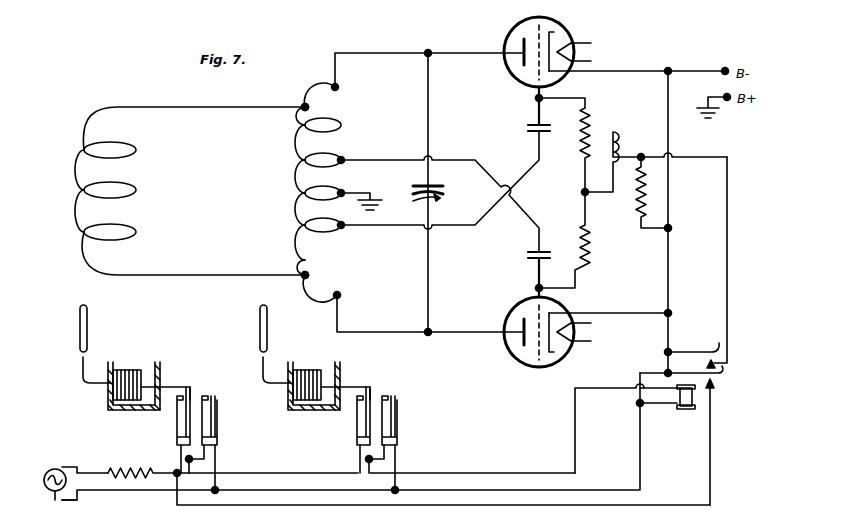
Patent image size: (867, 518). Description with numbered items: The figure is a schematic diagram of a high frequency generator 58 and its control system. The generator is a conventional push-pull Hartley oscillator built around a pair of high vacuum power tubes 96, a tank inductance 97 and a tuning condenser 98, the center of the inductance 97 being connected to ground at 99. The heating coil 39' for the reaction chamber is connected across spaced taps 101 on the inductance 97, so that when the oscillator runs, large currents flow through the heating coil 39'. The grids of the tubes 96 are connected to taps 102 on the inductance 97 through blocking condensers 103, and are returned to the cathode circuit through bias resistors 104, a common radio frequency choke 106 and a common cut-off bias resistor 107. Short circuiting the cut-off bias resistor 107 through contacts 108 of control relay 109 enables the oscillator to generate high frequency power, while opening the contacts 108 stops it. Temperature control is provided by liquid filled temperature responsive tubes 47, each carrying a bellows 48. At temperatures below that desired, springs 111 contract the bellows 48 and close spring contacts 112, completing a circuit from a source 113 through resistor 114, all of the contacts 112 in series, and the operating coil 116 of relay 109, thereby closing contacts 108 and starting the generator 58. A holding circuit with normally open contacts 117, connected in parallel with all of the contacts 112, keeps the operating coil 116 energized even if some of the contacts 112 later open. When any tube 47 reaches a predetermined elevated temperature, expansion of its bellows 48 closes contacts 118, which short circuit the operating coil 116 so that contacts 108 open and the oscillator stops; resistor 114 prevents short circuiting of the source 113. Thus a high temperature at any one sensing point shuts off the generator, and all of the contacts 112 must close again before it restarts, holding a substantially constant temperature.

The heating coil 39' is at (190, 191).
The spaced taps 101 is at (304, 110).
The inductance 97 is at (341, 125).
The taps 102 is at (343, 160).
The ground connection 99 is at (343, 193).
The high frequency generator 58 is at (457, 49).
The tuning condenser 98 is at (443, 196).
The high vacuum power tubes 96 is at (514, 29).
The blocking condensers 103 is at (528, 128).
The bias resistors 104 is at (590, 126).
The radio frequency choke 106 is at (607, 170).
The cut-off bias resistor 107 is at (637, 213).
The contacts 108 is at (719, 349).
The normally open contacts 117 is at (724, 376).
The control relay 109 is at (720, 389).
The operating coil 116 is at (688, 412).
The source 113 is at (47, 470).
The resistor 114 is at (112, 470).
The temperature responsive tubes 47 is at (87, 333).
The bellows 48 is at (127, 369).
The springs 111 is at (152, 368).
The spring contacts 112 is at (177, 404).
The contacts 118 is at (215, 399).